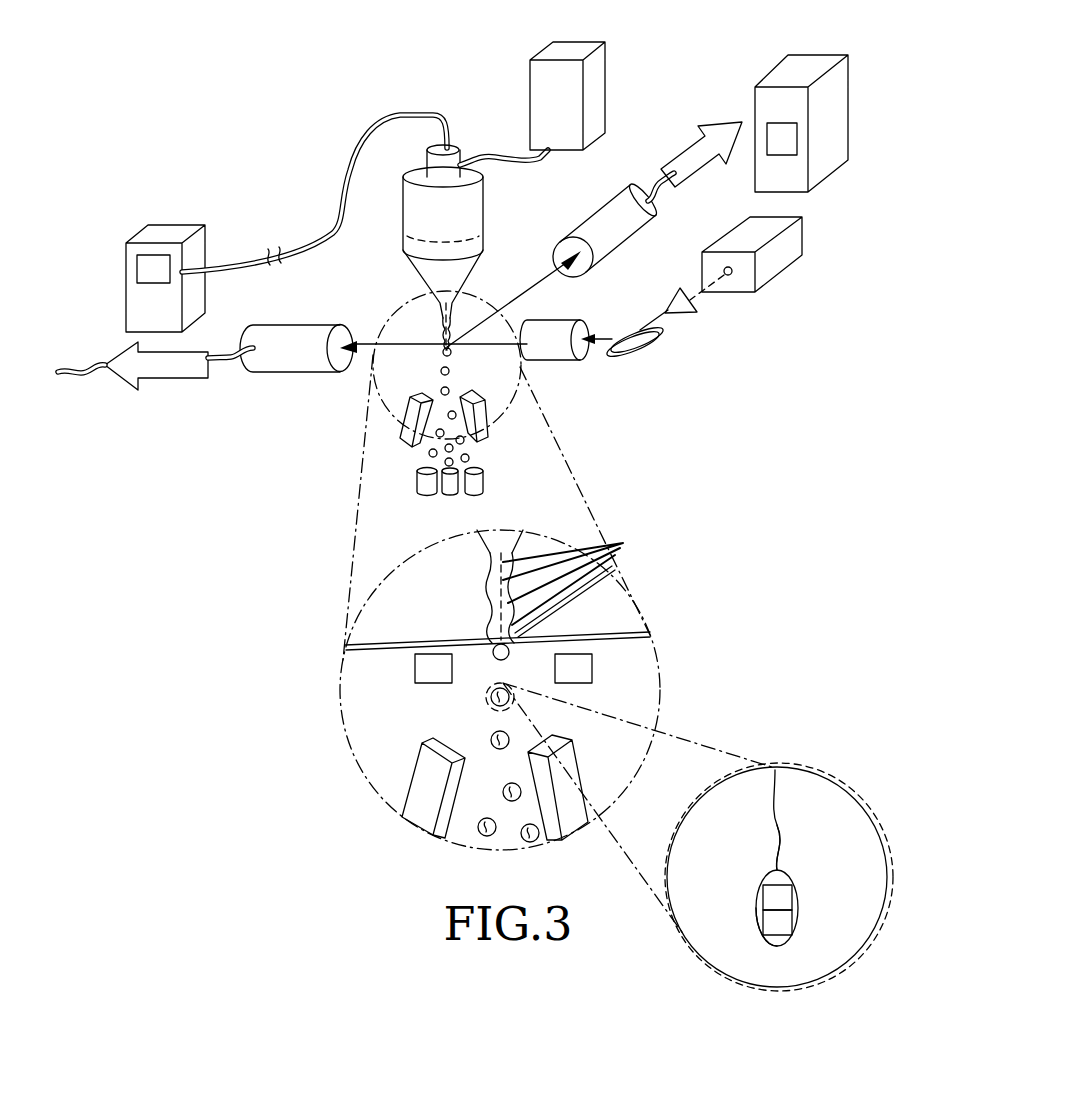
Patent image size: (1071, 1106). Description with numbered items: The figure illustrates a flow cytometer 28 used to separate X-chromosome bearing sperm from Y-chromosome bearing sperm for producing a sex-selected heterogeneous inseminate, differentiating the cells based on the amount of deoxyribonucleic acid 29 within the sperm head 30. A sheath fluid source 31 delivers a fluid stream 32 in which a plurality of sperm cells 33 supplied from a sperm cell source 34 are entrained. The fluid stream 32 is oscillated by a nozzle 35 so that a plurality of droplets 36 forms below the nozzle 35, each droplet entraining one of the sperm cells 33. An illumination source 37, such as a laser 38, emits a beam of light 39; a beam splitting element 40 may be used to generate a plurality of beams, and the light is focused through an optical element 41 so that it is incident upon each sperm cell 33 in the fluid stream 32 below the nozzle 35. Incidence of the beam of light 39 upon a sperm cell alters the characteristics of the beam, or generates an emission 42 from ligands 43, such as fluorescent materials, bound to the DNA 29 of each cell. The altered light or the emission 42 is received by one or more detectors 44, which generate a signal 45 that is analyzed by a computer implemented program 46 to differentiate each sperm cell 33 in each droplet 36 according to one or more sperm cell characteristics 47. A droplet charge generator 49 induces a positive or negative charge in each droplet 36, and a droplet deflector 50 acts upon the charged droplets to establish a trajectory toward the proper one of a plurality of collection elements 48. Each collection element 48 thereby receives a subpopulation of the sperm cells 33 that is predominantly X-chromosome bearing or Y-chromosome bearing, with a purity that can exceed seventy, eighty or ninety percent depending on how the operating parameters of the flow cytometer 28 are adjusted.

The flow cytometer 28 is at (262, 114).
The deoxyribonucleic acid (DNA) 29 is at (777, 922).
The sperm head 30 is at (763, 920).
The sheath fluid source 31 is at (567, 96).
The fluid stream 32 is at (433, 315).
The sperm cells 33 is at (812, 866).
The sperm cell source 34 is at (165, 278).
The nozzle 35 is at (455, 274).
The droplets 36 is at (438, 390).
The illumination source 37 is at (776, 265).
The laser 38 is at (778, 268).
The beam of light 39 is at (691, 297).
The beam splitting element 40 is at (697, 307).
The optical element 41 is at (560, 322).
The emission 42 is at (365, 345).
The ligands 43 is at (777, 897).
The detectors 44 is at (627, 196).
The signal 45 is at (423, 256).
The computer implemented program 46 is at (801, 123).
The sperm cell characteristics 47 is at (792, 917).
The collection elements 48 is at (417, 492).
The droplet charge generator 49 is at (503, 669).
The droplet deflector 50 is at (400, 439).